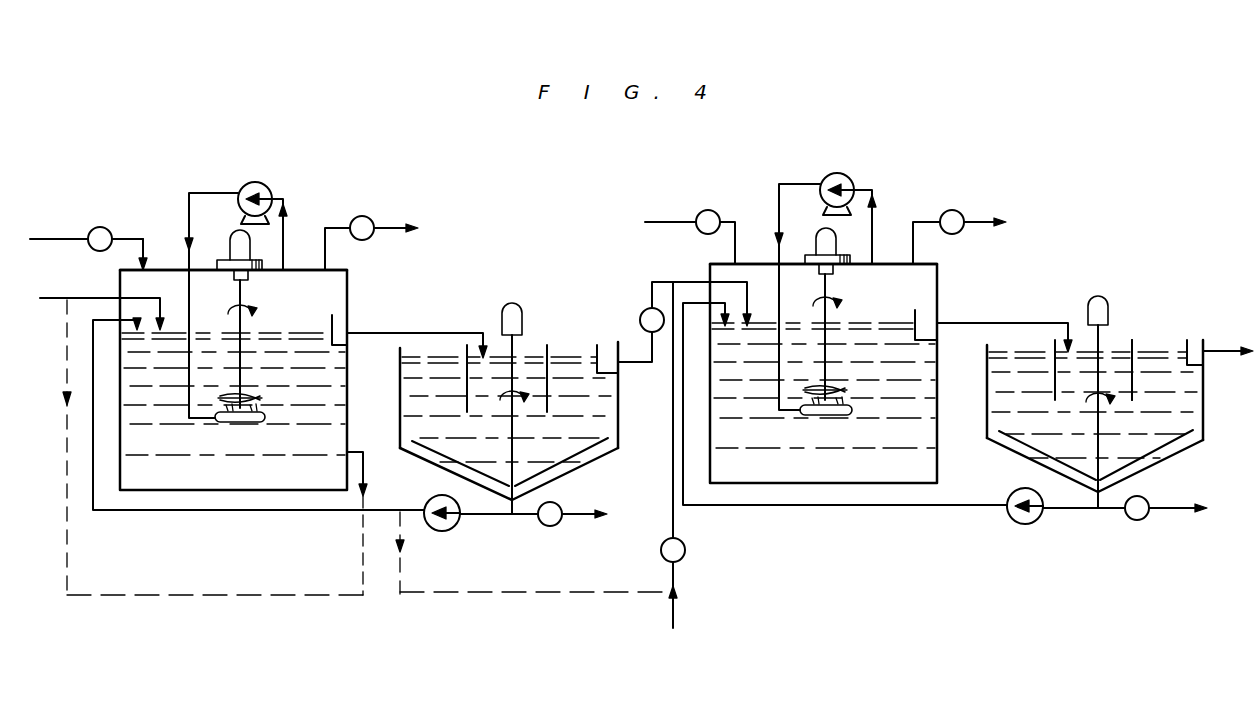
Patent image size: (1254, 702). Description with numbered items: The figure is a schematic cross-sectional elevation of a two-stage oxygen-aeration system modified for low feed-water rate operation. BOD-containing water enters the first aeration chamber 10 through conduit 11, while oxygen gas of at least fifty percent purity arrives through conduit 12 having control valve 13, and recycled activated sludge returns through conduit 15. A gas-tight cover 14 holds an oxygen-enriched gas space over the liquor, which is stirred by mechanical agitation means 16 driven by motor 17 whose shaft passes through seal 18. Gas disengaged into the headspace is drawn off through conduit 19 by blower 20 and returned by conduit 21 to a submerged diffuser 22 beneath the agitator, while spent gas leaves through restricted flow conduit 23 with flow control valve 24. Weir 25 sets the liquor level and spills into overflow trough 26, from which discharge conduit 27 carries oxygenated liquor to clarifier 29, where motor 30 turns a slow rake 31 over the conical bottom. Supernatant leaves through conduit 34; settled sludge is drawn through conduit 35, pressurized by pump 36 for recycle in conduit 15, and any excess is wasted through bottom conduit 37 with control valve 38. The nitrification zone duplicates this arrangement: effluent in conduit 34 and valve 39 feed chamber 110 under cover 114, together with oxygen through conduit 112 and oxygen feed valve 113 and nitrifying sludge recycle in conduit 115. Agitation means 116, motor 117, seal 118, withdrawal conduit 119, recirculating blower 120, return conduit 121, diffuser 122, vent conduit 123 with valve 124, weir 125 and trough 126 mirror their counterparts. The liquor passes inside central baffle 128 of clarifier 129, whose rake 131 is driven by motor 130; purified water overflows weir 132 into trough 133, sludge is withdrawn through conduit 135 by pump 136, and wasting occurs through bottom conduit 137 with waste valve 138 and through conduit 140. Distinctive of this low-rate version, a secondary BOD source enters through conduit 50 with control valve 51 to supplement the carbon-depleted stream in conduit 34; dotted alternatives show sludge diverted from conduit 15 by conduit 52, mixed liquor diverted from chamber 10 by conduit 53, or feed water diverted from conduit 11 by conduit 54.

The chamber 10 is at (219, 386).
The conduit 11 is at (102, 298).
The conduit 12 is at (59, 219).
The control valve 13 is at (117, 230).
The gas-tight cover 14 is at (233, 241).
The conduit 15 is at (258, 428).
The mechanical agitation means 16 is at (257, 393).
The motor 17 is at (230, 241).
The seal 18 is at (255, 339).
The conduit 19 is at (296, 225).
The blower 20 is at (263, 185).
The conduit 21 is at (209, 287).
The sparger or diffuser 22 is at (266, 415).
The restricted flow conduit 23 is at (355, 251).
The flow control valve 24 is at (384, 212).
The weir 25 is at (325, 316).
The overflow trough 26 is at (373, 311).
The discharge conduit 27 is at (443, 324).
The clarifier 29 is at (523, 403).
The motor 30 is at (522, 395).
The rake 31 is at (511, 469).
The conduit 34 is at (626, 363).
The conduit 35 is at (499, 528).
The pump 36 is at (438, 495).
The bottom conduit 37 is at (525, 524).
The control valve 38 is at (572, 500).
The effluent valve 39 is at (672, 307).
The conduit 50 is at (693, 410).
The control valve 51 is at (691, 583).
The conduit 52 is at (534, 553).
The conduit 53 is at (339, 523).
The conduit 54 is at (213, 447).
The chamber 110 is at (845, 373).
The conduit 112 is at (670, 201).
The oxygen feed valve 113 is at (727, 222).
The gas-tight cover 114 is at (823, 210).
The conduit 115 is at (845, 422).
The mechanical agitation means 116 is at (862, 387).
The motor 117 is at (817, 232).
The seal 118 is at (848, 332).
The conduit 119 is at (886, 224).
The recirculating blower 120 is at (846, 176).
The conduit 121 is at (797, 274).
The sparger or diffuser 122 is at (858, 410).
The restricted flow conduit 123 is at (933, 225).
The flow control valve 124 is at (973, 209).
The weir 125 is at (908, 308).
The overflow trough 126 is at (1004, 316).
The central concentric baffle 128 is at (1147, 351).
The clarifier 129 is at (1120, 399).
The motor 130 is at (1111, 388).
The rake 131 is at (1105, 461).
The weir 132 is at (1185, 334).
The trough 133 is at (1228, 329).
The conduit 135 is at (1084, 527).
The pump 136 is at (996, 506).
The bottom conduit 137 is at (1109, 516).
The waste valve 138 is at (1166, 517).
The conduit 140 is at (1228, 370).